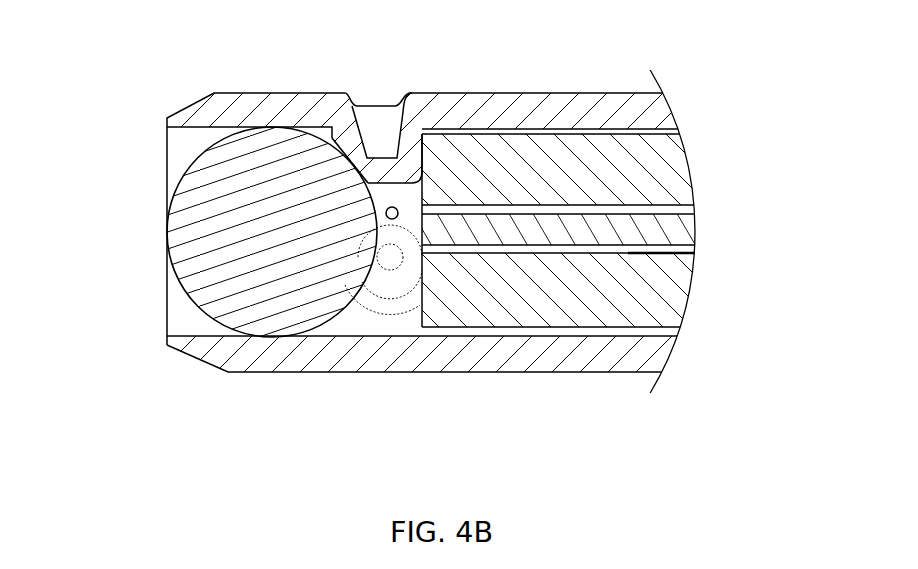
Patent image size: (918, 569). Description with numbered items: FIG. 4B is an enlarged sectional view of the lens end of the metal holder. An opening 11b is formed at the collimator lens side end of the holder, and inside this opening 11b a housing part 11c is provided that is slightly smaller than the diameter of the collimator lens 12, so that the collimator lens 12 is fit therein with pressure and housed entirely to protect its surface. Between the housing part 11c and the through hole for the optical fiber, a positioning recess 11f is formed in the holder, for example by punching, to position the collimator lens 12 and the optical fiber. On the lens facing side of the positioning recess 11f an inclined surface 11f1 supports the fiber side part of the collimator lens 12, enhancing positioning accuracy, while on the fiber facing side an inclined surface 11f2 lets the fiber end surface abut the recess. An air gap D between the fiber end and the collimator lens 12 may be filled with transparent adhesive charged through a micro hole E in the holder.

The opening 11b is at (167, 165).
The housing part 11c is at (186, 311).
The positioning recess 11f is at (402, 127).
The inclined surface 11f1 is at (350, 162).
The inclined surface 11f2 is at (417, 168).
The collimator lens 12 is at (183, 235).
The micro hole E is at (386, 215).
The air gap D is at (384, 284).